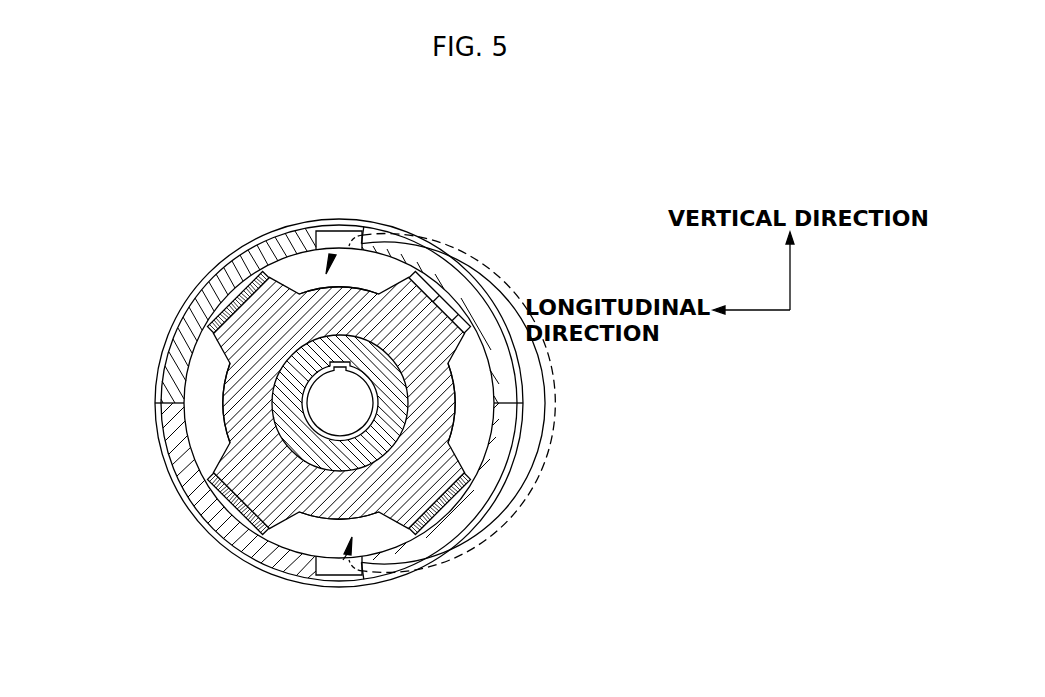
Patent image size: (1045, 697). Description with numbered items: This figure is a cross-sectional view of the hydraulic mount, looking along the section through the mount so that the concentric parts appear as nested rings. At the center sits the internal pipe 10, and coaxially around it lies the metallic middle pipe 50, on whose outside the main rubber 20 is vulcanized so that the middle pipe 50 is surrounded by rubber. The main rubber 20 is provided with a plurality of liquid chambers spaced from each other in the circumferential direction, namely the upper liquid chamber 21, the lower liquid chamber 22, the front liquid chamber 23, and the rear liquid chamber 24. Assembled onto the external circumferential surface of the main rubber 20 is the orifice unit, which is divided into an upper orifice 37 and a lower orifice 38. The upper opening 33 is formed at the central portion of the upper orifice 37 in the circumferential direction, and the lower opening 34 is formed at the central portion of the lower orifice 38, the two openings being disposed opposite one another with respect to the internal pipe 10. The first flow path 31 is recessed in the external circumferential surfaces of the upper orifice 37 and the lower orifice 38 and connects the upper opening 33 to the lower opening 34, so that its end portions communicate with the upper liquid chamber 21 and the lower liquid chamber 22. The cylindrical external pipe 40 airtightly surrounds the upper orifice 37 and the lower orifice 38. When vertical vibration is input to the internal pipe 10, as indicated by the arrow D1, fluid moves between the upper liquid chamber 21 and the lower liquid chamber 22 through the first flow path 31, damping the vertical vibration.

The internal pipe 10 is at (307, 455).
The main rubber 20 is at (225, 533).
The upper liquid chamber 21 is at (295, 278).
The lower liquid chamber 22 is at (388, 545).
The front liquid chamber 23 is at (205, 370).
The rear liquid chamber 24 is at (487, 384).
The first flow path 31 is at (515, 428).
The upper opening 33 is at (333, 240).
The lower opening 34 is at (333, 570).
The upper orifice 37 is at (208, 299).
The lower orifice 38 is at (193, 478).
The external pipe 40 is at (418, 240).
The middle pipe 50 is at (447, 520).
The arrow D1 is at (512, 483).